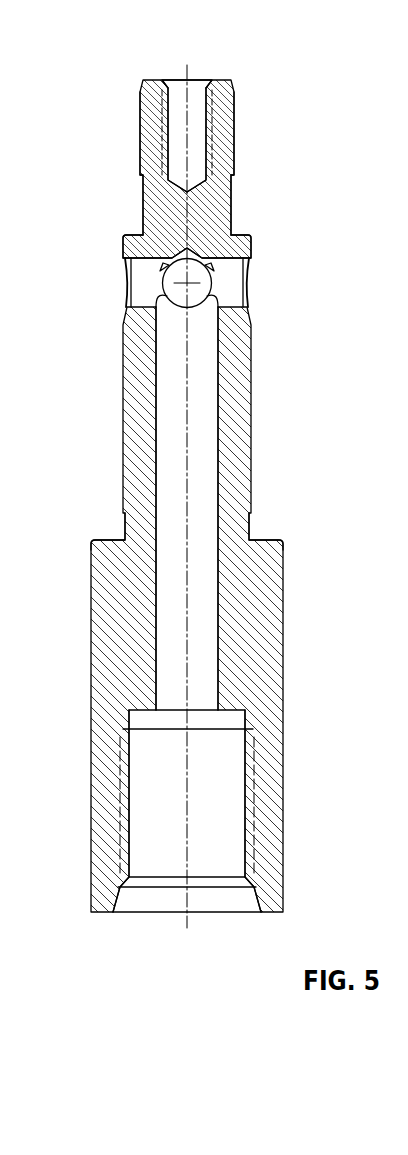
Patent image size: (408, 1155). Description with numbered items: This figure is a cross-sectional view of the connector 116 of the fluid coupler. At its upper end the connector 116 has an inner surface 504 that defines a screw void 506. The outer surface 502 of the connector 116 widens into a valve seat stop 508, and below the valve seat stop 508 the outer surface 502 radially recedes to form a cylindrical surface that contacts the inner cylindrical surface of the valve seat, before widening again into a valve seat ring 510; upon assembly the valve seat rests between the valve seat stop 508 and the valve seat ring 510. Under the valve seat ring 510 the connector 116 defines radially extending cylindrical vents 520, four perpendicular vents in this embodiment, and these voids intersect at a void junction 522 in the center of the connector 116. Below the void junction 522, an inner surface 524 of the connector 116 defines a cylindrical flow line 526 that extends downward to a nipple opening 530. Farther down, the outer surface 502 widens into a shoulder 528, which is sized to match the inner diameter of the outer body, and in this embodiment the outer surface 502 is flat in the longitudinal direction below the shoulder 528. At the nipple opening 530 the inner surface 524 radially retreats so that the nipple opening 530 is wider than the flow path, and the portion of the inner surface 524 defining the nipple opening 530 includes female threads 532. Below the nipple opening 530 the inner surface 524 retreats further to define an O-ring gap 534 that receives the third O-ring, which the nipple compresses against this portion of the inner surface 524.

The connector 116 is at (200, 498).
The outer surface 502 is at (250, 71).
The inner surface 504 is at (169, 107).
The screw void 506 is at (176, 148).
The valve seat stop 508 is at (224, 143).
The valve seat ring 510 is at (236, 248).
The radially extending cylindrical vents 520 is at (234, 290).
The void junction 522 is at (203, 287).
The inner surface 524 is at (153, 686).
The cylindrical flow line 526 is at (178, 370).
The shoulder 528 is at (113, 550).
The nipple opening 530 is at (146, 842).
The female threads 532 is at (248, 813).
The O-ring gap 534 is at (128, 898).